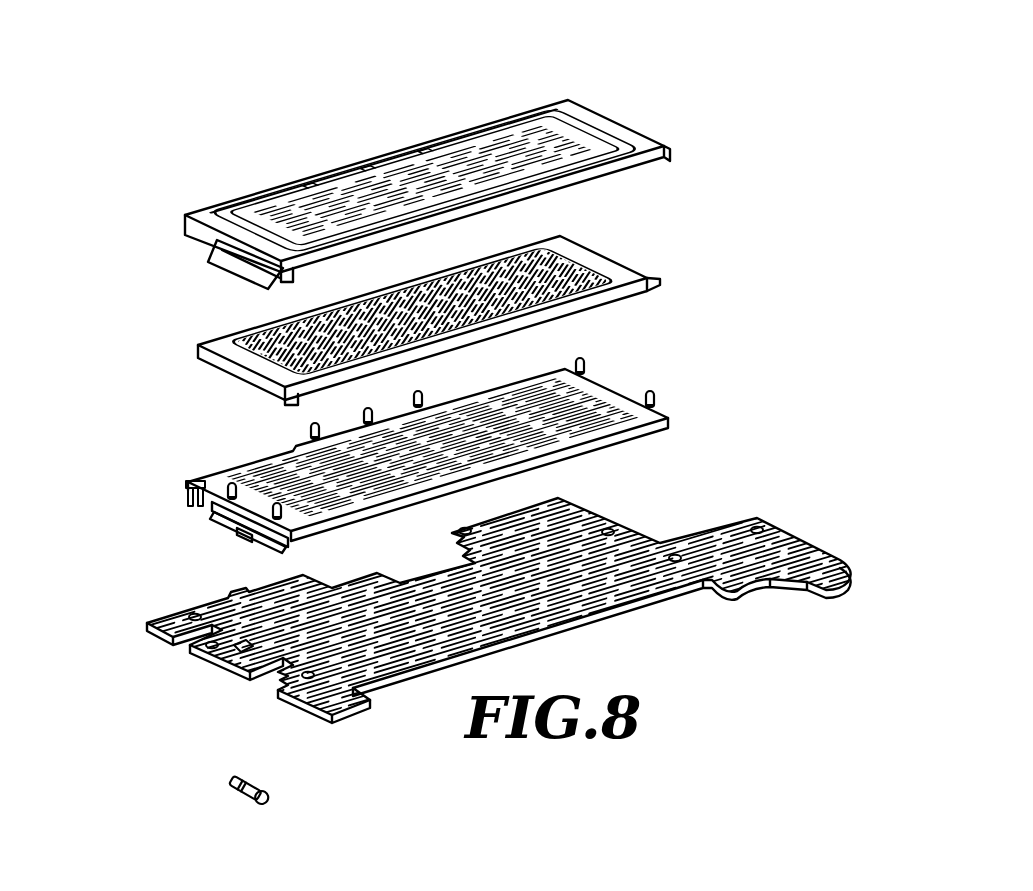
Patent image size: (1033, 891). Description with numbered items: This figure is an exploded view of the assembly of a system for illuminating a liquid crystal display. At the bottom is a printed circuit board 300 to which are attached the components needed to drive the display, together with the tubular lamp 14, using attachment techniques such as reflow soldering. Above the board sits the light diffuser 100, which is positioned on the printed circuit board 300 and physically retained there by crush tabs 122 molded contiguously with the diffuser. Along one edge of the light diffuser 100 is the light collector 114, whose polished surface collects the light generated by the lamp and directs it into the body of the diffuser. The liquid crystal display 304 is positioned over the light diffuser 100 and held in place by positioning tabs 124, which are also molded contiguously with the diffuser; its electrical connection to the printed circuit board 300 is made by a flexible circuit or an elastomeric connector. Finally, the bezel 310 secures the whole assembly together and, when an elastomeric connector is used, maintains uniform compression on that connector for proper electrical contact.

The bezel 310 is at (617, 120).
The liquid crystal display 304 is at (233, 332).
The light diffuser 100 is at (616, 388).
The positioning tabs 124 is at (586, 362).
The crush tabs 122 is at (190, 507).
The light collector 114 is at (250, 537).
The printed circuit board 300 is at (197, 600).
The tubular lamp 14 is at (227, 778).